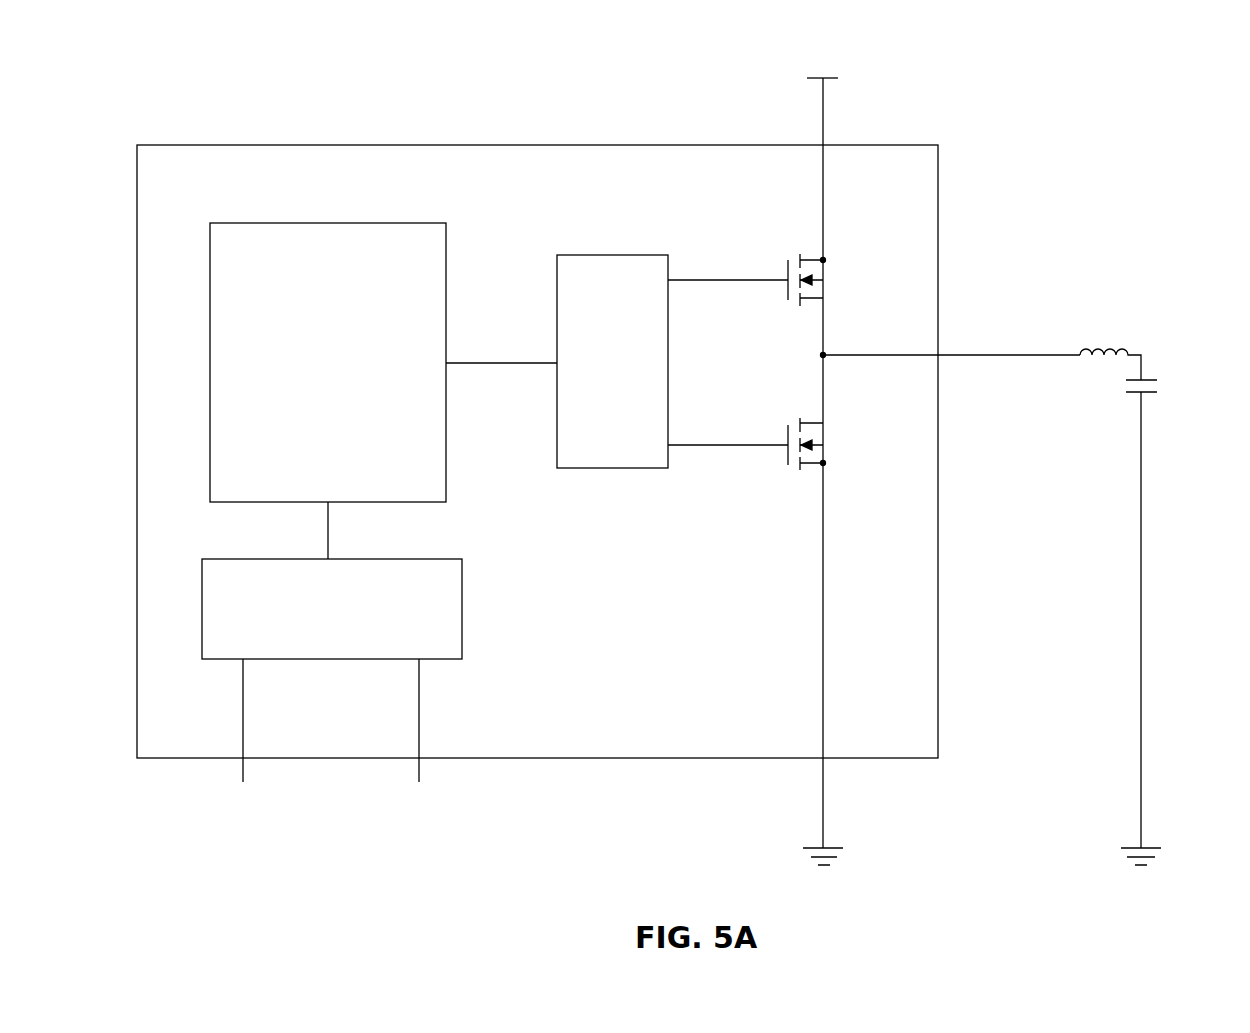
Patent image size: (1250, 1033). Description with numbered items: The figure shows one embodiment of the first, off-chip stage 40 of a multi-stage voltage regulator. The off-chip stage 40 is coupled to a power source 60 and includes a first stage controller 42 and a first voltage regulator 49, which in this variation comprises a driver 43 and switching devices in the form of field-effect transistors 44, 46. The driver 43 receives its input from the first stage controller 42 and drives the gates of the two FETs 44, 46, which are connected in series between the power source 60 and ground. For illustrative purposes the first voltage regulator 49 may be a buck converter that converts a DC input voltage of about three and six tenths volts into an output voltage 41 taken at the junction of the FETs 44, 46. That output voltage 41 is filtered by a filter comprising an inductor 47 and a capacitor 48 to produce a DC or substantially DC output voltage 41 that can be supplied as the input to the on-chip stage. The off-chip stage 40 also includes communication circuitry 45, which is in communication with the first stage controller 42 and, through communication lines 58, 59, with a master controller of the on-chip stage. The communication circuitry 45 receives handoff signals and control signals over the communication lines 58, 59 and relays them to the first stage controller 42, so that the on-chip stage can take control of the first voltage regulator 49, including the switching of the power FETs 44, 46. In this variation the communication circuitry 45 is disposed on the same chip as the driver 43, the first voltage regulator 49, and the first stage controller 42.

The first, off-chip stage 40 is at (1083, 82).
The output voltage 41 is at (1007, 356).
The first stage controller 42 is at (268, 222).
The driver 43 is at (617, 254).
The field-effect transistor 44 is at (825, 289).
The communication circuitry 45 is at (463, 615).
The field-effect transistor 46 is at (826, 436).
The inductor 47 is at (1098, 343).
The capacitor 48 is at (1160, 387).
The first voltage regulator 49 is at (664, 726).
The communication line 58 is at (245, 771).
The communication line 59 is at (421, 771).
The power source 60 is at (858, 62).